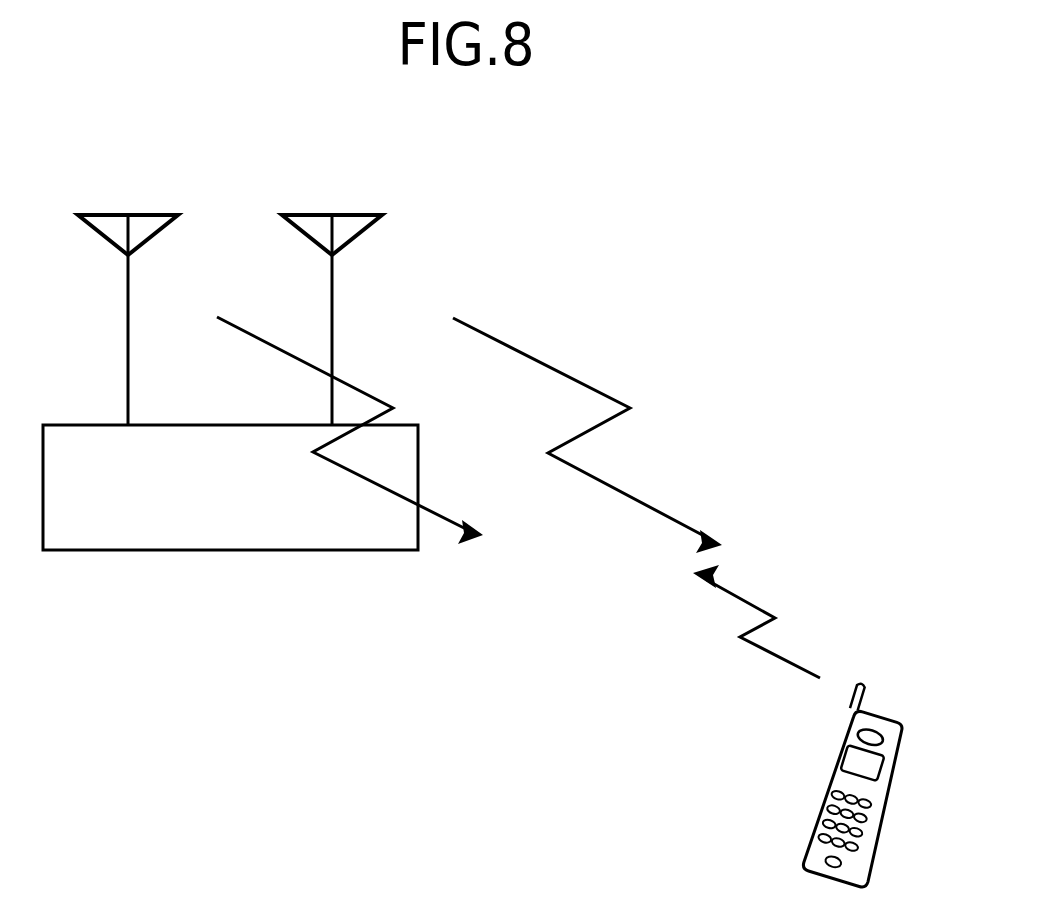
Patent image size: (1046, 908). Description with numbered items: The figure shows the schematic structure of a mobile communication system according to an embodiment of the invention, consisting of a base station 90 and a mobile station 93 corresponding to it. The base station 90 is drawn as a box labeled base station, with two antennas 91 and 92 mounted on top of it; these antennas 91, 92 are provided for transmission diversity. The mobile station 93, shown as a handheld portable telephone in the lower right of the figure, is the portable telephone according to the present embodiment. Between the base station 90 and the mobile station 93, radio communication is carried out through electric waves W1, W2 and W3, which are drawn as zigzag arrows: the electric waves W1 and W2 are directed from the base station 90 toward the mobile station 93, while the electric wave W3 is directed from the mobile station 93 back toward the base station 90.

The base station 90 is at (140, 552).
The antenna 91 is at (156, 212).
The antenna 92 is at (356, 212).
The mobile station 93 is at (868, 868).
The electric wave W1 is at (446, 522).
The electric wave W2 is at (593, 390).
The electric wave W3 is at (765, 650).